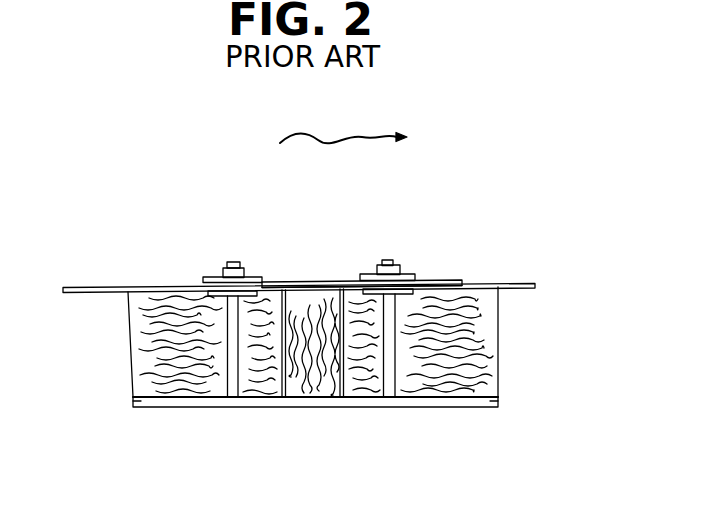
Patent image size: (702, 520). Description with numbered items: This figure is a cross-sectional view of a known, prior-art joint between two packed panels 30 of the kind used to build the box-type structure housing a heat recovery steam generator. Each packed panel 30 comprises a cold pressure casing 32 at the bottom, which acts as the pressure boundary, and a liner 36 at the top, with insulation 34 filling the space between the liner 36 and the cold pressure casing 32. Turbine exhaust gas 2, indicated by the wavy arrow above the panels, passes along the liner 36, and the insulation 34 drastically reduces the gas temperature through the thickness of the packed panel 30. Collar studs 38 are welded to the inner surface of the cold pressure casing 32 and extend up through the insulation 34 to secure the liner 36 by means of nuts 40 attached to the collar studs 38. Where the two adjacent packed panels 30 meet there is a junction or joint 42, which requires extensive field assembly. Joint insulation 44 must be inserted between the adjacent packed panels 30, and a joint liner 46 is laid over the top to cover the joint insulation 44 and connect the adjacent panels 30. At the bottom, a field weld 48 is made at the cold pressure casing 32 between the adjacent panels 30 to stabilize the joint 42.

The turbine exhaust gas 2 is at (350, 138).
The packed panel 30 is at (147, 271).
The cold pressure casing 32 is at (138, 402).
The insulation 34 is at (135, 347).
The liner 36 is at (87, 293).
The collar stud 38 is at (225, 368).
The nut 40 is at (226, 270).
The joint 42 is at (337, 276).
The joint insulation 44 is at (300, 297).
The joint liner 46 is at (317, 287).
The field weld 48 is at (312, 404).